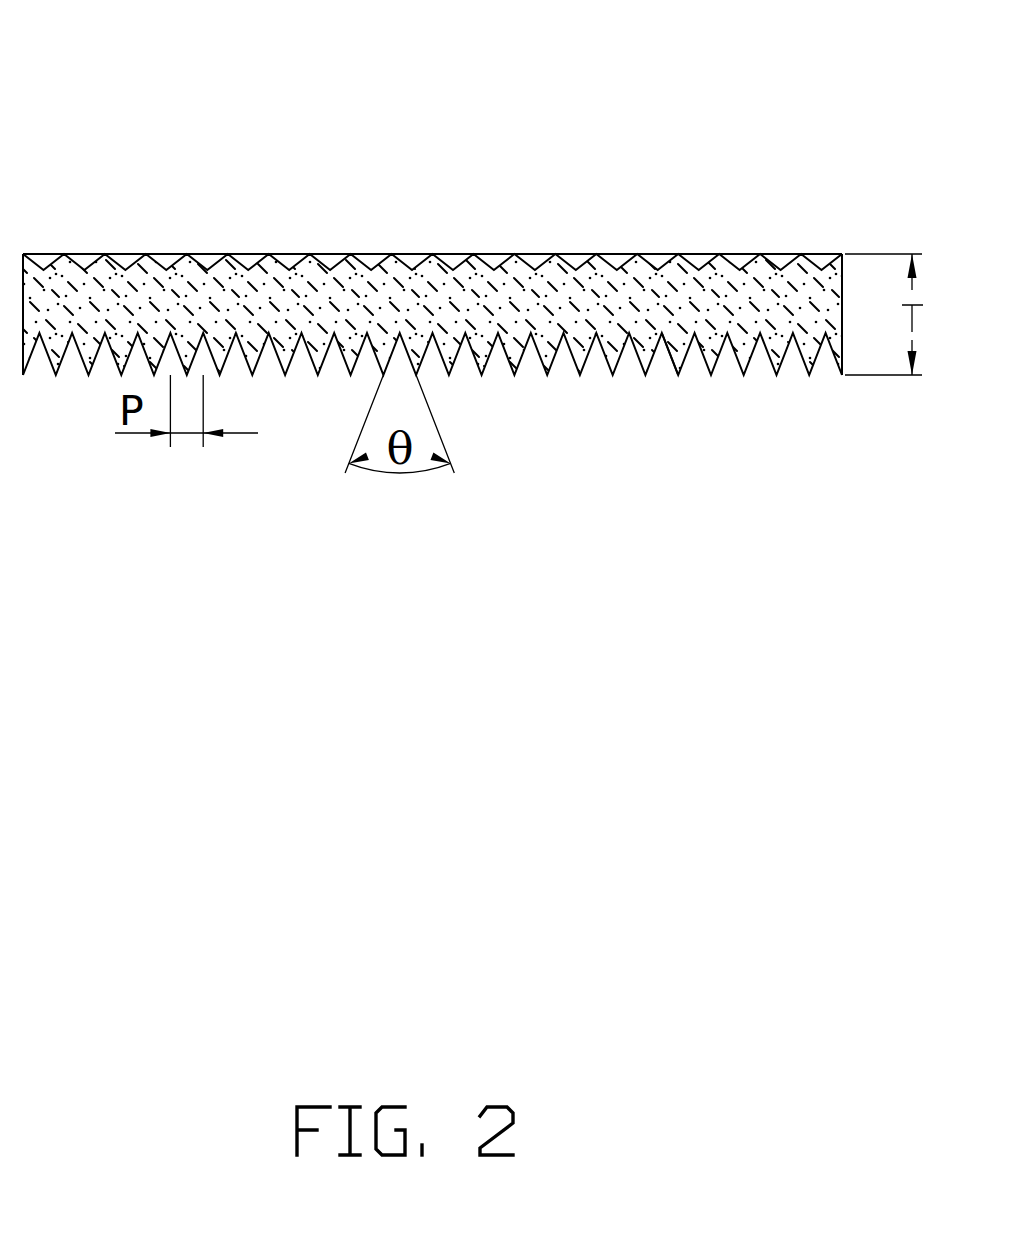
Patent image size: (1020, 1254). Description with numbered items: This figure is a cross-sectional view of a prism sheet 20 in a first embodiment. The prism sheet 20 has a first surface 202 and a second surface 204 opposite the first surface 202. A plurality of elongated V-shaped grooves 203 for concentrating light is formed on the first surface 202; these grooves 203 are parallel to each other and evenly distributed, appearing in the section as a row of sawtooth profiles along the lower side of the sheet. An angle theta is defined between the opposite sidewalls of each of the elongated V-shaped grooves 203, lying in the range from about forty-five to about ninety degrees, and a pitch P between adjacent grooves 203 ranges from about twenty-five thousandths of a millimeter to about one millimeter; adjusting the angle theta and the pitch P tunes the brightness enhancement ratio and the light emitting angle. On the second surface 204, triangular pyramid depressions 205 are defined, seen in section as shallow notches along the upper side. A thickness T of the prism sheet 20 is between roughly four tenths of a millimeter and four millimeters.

The prism sheet 20 is at (471, 256).
The first surface 202 is at (727, 333).
The elongated V-shaped grooves 203 is at (662, 353).
The second surface 204 is at (812, 254).
The triangular pyramid depressions 205 is at (737, 260).